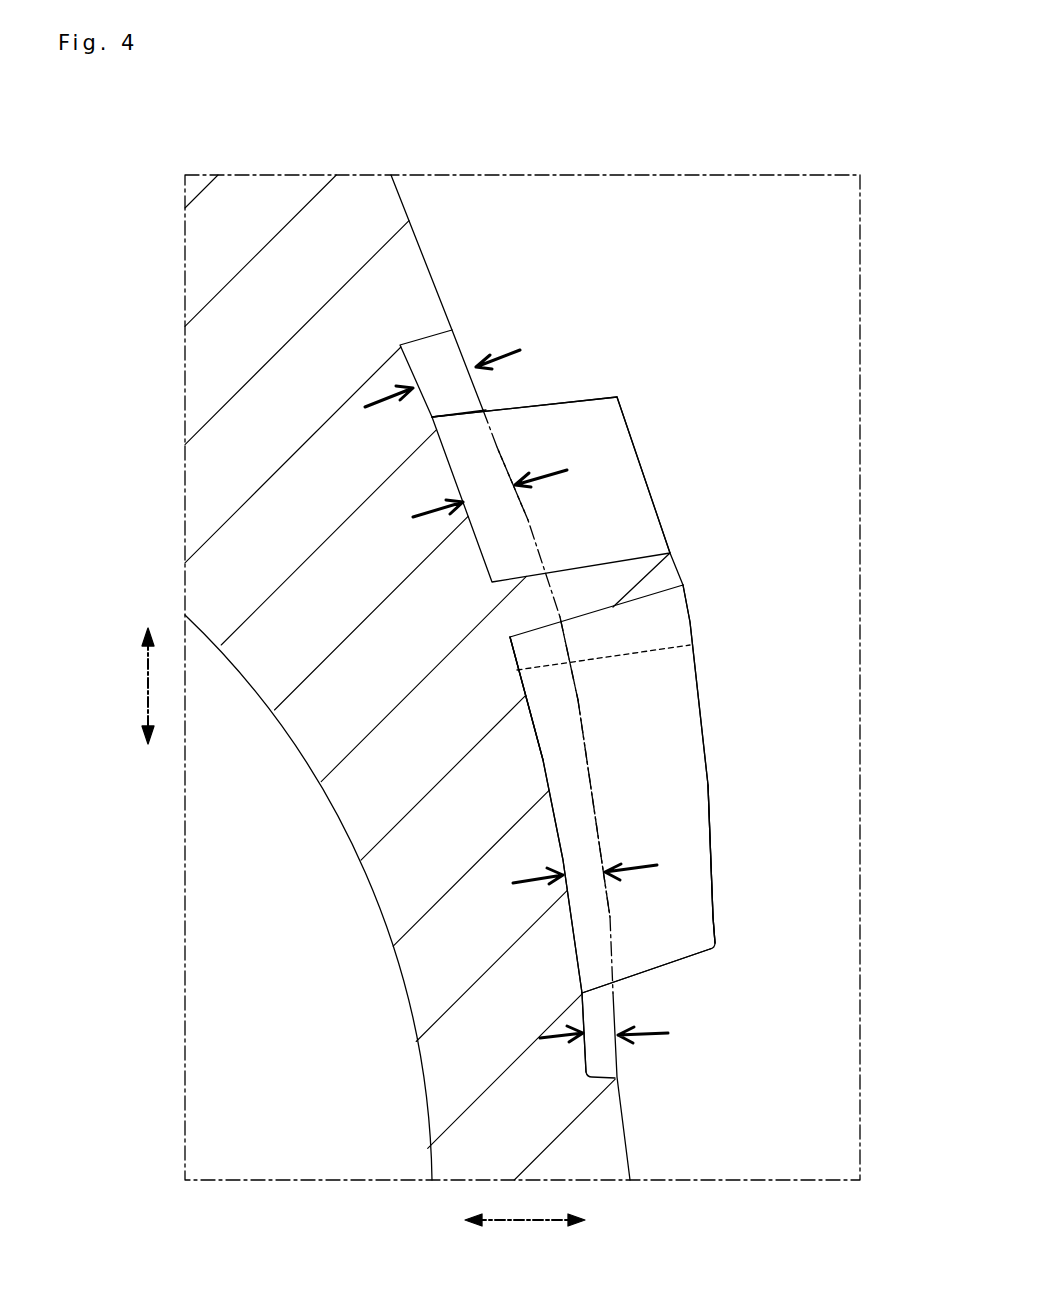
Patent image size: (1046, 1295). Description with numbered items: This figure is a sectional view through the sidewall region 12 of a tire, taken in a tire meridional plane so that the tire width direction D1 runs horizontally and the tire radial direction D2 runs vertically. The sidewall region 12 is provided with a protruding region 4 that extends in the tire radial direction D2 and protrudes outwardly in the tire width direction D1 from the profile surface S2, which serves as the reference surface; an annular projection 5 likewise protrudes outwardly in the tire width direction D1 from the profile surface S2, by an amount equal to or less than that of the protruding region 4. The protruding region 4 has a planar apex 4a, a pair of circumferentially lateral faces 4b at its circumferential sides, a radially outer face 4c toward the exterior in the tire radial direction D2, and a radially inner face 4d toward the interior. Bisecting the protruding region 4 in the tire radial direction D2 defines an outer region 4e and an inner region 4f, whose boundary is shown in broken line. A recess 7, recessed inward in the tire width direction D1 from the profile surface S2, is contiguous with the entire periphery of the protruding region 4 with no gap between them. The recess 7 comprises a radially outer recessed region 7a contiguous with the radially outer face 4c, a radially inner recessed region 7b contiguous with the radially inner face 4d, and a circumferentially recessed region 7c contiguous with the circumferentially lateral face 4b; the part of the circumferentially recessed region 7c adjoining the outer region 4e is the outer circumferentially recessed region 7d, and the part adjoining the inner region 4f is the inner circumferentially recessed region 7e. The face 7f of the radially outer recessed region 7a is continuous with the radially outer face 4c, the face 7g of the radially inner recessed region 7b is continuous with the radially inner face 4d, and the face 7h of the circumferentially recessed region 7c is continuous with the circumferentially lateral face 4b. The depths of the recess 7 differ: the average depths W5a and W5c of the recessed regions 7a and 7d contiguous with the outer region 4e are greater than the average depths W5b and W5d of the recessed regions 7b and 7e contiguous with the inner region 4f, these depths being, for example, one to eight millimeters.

The protruding region 4 is at (652, 433).
The apex 4a is at (690, 622).
The circumferentially lateral face 4b is at (677, 702).
The radially outer face 4c is at (576, 400).
The radially inner face 4d is at (690, 977).
The outer region 4e is at (652, 478).
The inner region 4f is at (708, 782).
The annular projection 5 is at (671, 554).
The recess 7 is at (589, 757).
The radially outer recessed region 7a is at (460, 345).
The radially inner recessed region 7b is at (616, 1062).
The circumferentially recessed region 7c is at (568, 683).
The outer circumferentially recessed region 7d is at (507, 512).
The inner circumferentially recessed region 7e is at (580, 798).
The face of radially outer recessed region 7f is at (461, 413).
The face of radially inner recessed region 7g is at (600, 993).
The face of circumferentially recessed region 7h is at (558, 725).
The sidewall region 12 is at (740, 262).
The profile surface S2 is at (610, 913).
The depth of radially outer recessed region W5a is at (440, 391).
The depth of radially inner recessed region W5b is at (599, 1049).
The depth of outer circumferentially recessed region W5c is at (479, 493).
The depth of inner circumferentially recessed region W5d is at (573, 870).
The tire width direction D1 is at (525, 1234).
The tire radial direction D2 is at (133, 686).